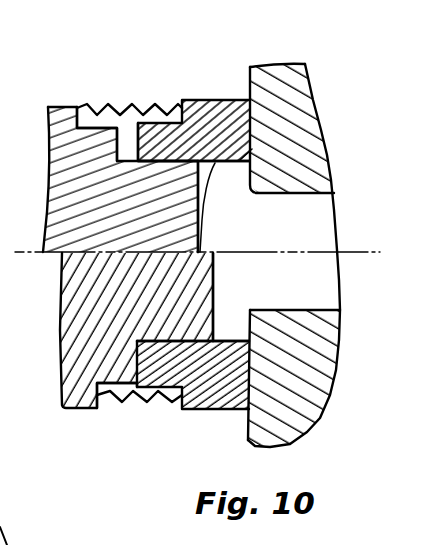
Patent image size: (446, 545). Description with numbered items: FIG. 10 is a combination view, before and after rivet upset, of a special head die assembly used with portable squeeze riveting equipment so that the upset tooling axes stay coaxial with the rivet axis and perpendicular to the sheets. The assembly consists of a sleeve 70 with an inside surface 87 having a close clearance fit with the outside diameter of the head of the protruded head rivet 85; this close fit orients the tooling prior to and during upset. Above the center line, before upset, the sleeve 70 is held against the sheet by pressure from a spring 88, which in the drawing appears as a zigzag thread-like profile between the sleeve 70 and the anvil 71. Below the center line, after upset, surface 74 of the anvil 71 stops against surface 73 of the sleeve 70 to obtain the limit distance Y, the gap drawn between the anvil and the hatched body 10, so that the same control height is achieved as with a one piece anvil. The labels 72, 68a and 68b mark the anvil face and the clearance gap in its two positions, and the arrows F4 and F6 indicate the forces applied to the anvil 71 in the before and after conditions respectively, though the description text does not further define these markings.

The housing body 10 is at (294, 121).
The sleeve 70 is at (215, 113).
The anvil 71 is at (58, 170).
The end face of piston 72 is at (197, 188).
The surface of sleeve 73 is at (142, 137).
The surface of anvil 74 is at (117, 147).
The protruded head rivet 85 is at (320, 216).
The inside surface 87 is at (252, 149).
The spring 88 is at (121, 107).
The clearance gap (first position) 68a is at (202, 212).
The clearance gap (second position) 68b is at (216, 292).
The force F4 is at (196, 222).
The force F6 is at (211, 272).
The recess height / limit distance Y is at (288, 323).